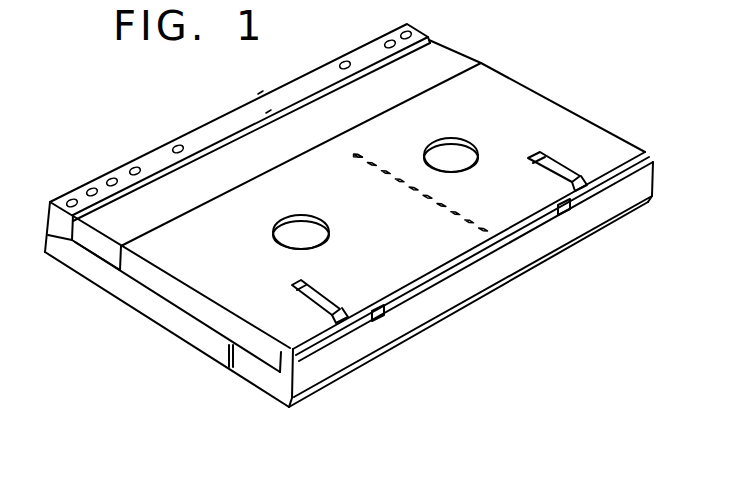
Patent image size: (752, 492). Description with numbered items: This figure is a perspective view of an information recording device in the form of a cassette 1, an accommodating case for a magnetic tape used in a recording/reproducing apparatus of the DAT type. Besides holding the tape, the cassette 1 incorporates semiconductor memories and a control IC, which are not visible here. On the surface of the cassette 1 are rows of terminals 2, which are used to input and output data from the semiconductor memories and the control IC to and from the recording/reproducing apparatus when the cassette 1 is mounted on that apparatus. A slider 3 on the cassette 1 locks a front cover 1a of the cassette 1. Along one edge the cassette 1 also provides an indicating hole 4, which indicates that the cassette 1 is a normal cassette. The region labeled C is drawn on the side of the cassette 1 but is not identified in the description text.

The cassette 1 is at (349, 216).
The front cover 1a is at (328, 358).
The terminals 2 is at (484, 237).
The slider 3 is at (576, 122).
The indicating hole 4 is at (172, 140).
The groove C is at (100, 245).